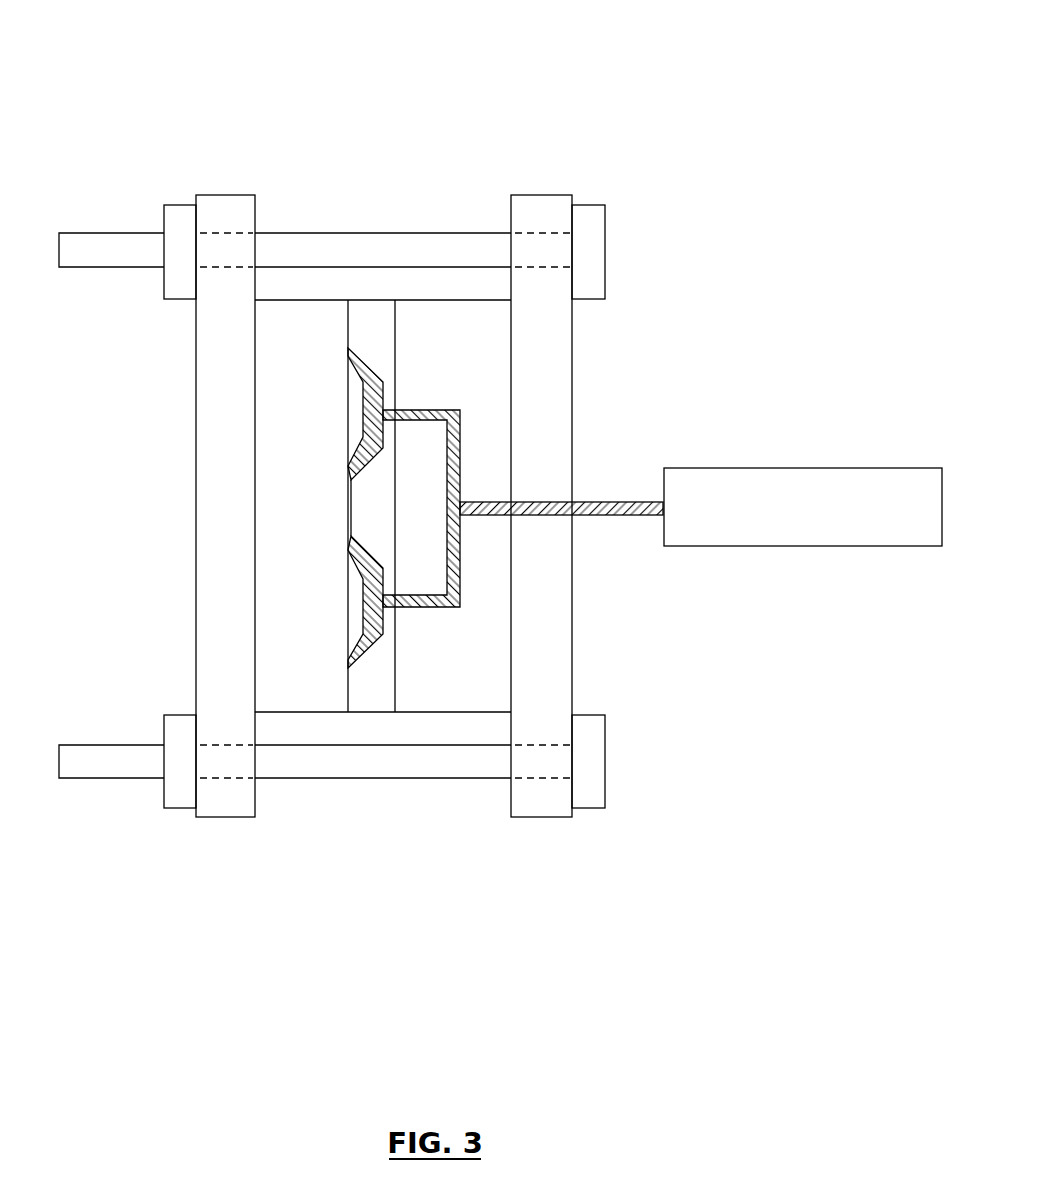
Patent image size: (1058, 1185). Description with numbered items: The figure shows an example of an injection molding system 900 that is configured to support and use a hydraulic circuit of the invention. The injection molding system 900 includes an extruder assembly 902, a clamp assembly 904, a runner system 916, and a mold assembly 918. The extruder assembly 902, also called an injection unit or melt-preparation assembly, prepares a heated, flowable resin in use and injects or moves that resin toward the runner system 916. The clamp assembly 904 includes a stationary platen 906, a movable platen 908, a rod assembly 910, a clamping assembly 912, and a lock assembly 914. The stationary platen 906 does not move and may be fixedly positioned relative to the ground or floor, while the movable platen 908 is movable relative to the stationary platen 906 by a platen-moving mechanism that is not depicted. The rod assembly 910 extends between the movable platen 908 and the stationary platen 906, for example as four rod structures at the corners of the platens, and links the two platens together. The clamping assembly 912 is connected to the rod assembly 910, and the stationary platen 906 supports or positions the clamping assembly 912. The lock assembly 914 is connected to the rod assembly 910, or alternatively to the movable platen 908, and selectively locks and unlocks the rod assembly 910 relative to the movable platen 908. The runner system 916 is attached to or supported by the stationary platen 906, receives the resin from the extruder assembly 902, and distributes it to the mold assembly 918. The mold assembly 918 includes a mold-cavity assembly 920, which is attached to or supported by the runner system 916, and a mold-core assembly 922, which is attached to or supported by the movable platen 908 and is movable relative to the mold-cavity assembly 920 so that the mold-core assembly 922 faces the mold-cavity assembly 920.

The injection molding system 900 is at (252, 65).
The extruder assembly 902 is at (700, 466).
The clamp assembly 904 is at (57, 943).
The stationary platen 906 is at (530, 817).
The movable platen 908 is at (233, 817).
The rod assembly 910 is at (327, 778).
The clamping assembly 912 is at (588, 808).
The lock assembly 914 is at (185, 812).
The runner system 916 is at (432, 300).
The mold assembly 918 is at (382, 123).
The mold-cavity assembly 920 is at (368, 300).
The mold-core assembly 922 is at (308, 300).